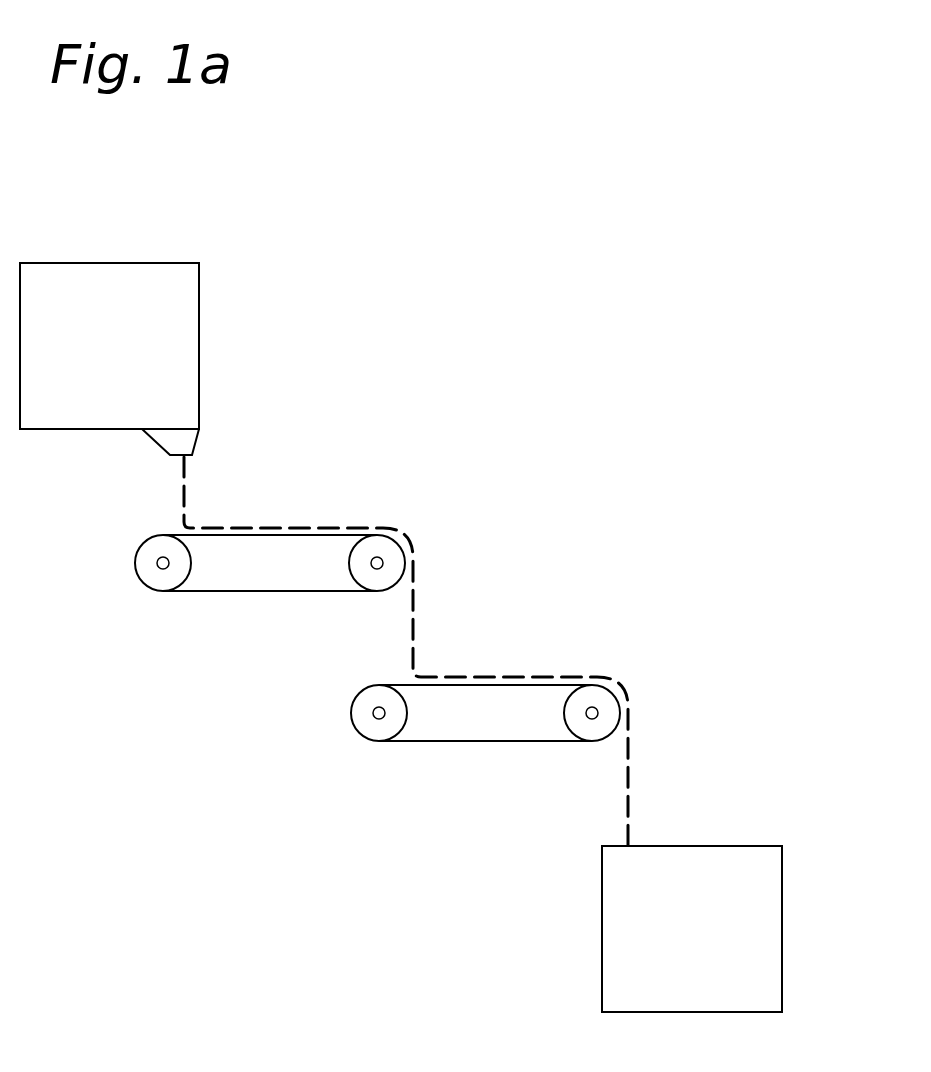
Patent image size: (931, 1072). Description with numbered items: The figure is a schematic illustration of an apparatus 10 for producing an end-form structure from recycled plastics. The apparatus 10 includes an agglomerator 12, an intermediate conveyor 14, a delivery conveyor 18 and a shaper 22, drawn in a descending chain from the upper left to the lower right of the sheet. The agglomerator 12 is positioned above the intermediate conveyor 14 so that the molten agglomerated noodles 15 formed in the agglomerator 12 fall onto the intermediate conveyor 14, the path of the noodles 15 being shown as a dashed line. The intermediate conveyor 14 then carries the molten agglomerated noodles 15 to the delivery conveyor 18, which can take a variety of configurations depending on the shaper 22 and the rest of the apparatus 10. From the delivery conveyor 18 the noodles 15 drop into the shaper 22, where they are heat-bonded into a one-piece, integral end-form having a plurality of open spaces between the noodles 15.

The apparatus 10 is at (532, 461).
The agglomerator 12 is at (188, 326).
The intermediate conveyor 14 is at (347, 521).
The molten agglomerated noodles 15 is at (185, 497).
The delivery conveyor 18 is at (541, 660).
The shaper 22 is at (772, 917).